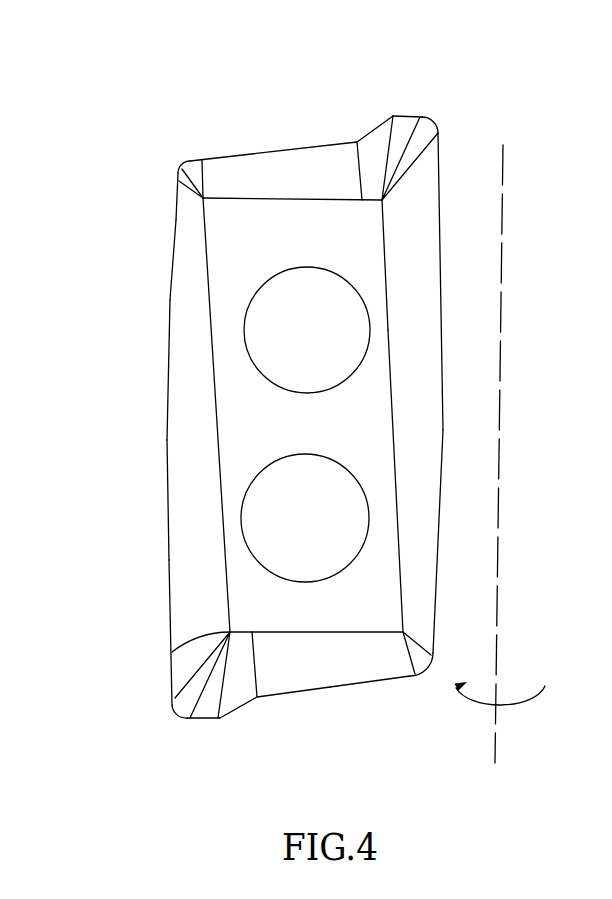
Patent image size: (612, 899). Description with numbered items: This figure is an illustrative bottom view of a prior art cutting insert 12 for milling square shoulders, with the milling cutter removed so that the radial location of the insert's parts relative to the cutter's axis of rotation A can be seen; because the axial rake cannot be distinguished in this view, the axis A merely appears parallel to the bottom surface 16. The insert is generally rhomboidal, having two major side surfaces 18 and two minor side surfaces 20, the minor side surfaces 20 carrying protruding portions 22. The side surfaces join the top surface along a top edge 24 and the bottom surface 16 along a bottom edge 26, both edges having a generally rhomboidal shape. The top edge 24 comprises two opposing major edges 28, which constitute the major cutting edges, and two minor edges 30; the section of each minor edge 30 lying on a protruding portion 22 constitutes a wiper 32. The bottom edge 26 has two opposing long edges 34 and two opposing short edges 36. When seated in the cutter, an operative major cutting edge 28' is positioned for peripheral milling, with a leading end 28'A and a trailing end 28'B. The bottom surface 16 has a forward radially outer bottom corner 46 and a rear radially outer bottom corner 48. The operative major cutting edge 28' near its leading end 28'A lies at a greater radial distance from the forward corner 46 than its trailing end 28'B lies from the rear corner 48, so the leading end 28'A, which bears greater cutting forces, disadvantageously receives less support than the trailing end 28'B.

The cutting insert 12 is at (182, 112).
The bottom surface 16 is at (293, 215).
The major side surfaces 18 is at (185, 453).
The minor side surfaces 20 is at (272, 165).
The protruding portions 22 is at (390, 108).
The top edge 24 is at (175, 250).
The bottom edge 26 is at (385, 247).
The major edges 28 is at (460, 541).
The operative major cutting edge 28' is at (120, 370).
The leading end 28'A is at (121, 632).
The trailing end 28'B is at (124, 196).
The minor edges 30 is at (388, 688).
The wiper 32 is at (412, 115).
The long edges 34 is at (207, 307).
The short edges 36 is at (228, 199).
The forward radially outer bottom corner 46 is at (172, 651).
The rear radially outer bottom corner 48 is at (181, 166).
The axis of rotation A is at (503, 177).